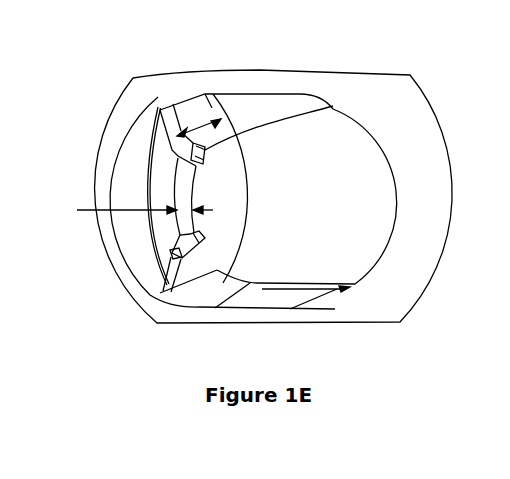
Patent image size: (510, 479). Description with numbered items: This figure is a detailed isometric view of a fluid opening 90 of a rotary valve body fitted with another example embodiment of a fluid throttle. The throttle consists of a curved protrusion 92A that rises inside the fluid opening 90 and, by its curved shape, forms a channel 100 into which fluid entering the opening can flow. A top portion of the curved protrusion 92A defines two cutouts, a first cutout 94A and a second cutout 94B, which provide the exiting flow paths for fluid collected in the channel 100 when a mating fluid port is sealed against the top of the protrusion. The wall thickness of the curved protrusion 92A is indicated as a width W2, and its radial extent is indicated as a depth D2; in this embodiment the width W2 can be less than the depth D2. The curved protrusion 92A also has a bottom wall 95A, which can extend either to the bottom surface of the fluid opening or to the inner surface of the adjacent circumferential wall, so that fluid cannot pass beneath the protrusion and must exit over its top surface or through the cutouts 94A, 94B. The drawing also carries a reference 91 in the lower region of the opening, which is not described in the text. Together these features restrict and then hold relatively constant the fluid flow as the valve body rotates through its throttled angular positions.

The fluid opening 90 is at (372, 267).
The retaining clip 91 is at (198, 298).
The curved protrusion 92A is at (212, 110).
The first cutout 94A is at (205, 238).
The second cutout 94B is at (333, 106).
The bottom wall 95A is at (280, 96).
The channel 100 is at (162, 177).
The depth D2 is at (190, 127).
The width W2 is at (123, 212).